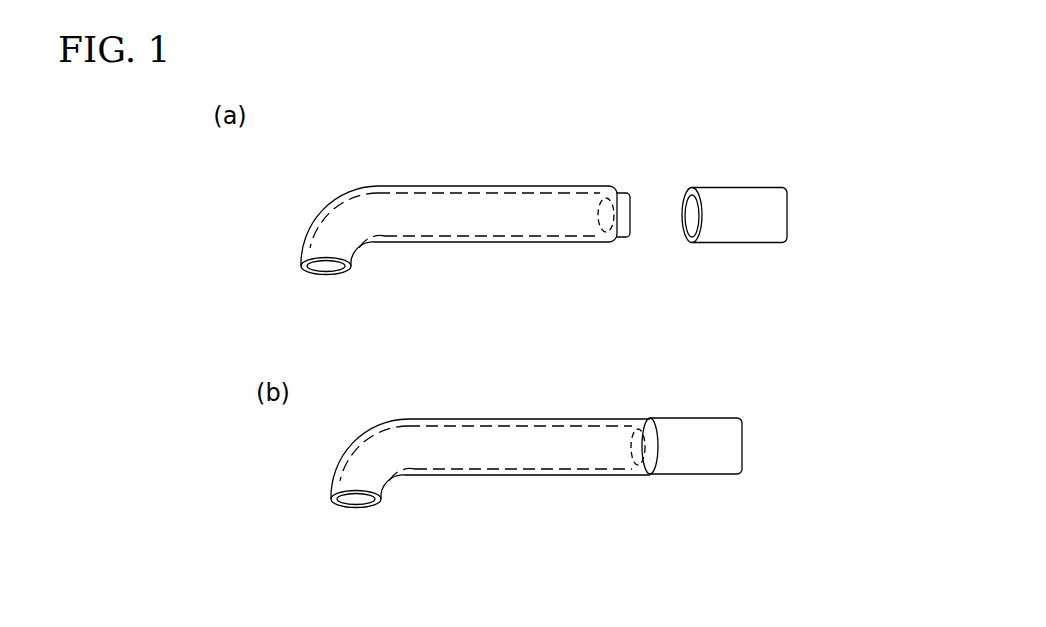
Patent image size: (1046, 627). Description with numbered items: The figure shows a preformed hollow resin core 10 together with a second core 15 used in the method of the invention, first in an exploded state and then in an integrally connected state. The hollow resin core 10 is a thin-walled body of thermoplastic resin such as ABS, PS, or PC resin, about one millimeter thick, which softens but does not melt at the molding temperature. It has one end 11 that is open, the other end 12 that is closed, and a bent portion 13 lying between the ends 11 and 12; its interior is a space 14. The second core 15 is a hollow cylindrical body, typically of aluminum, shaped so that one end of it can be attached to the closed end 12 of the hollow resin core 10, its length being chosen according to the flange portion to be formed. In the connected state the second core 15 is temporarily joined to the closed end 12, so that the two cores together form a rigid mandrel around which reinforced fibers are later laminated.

The hollow resin core 10 is at (355, 185).
The one end 11 is at (326, 274).
The other end 12 is at (628, 200).
The bent portion 13 is at (378, 222).
The space 14 is at (545, 208).
The second core 15 is at (750, 182).